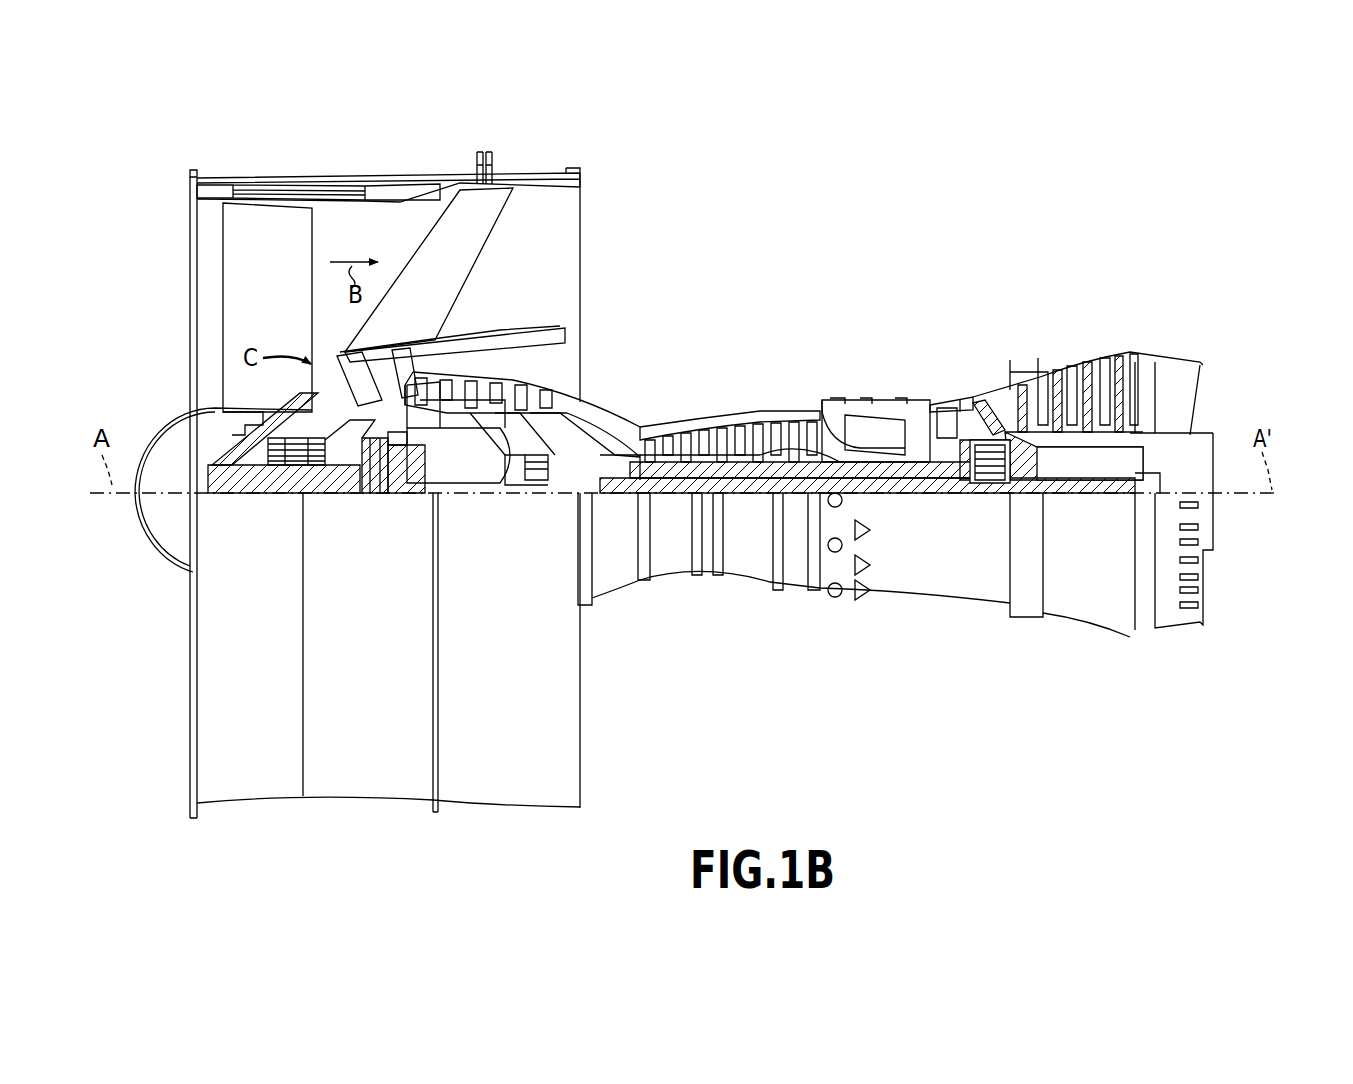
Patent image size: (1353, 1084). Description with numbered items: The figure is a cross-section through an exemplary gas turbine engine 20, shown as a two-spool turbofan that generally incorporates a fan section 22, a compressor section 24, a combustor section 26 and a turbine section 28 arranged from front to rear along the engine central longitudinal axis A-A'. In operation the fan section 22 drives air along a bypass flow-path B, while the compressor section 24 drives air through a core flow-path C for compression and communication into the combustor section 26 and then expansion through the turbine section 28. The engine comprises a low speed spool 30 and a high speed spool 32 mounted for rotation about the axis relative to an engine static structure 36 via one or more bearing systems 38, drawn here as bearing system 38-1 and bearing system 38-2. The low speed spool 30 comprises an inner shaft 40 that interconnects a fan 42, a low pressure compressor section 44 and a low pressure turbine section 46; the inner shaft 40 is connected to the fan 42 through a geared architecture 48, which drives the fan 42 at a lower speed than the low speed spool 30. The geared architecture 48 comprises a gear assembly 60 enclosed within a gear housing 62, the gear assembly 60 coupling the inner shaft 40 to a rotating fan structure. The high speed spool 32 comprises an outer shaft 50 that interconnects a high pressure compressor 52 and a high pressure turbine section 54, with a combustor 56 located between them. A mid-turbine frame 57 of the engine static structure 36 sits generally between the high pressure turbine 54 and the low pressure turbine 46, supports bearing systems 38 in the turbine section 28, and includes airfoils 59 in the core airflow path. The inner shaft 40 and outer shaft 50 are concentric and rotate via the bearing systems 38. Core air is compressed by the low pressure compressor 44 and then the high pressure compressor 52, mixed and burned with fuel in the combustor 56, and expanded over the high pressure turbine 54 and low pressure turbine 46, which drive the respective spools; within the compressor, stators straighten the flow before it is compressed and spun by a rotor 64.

The gas turbine engine 20 is at (931, 214).
The fan section 22 is at (430, 157).
The compressor section 24 is at (443, 290).
The combustor section 26 is at (925, 290).
The turbine section 28 is at (1145, 290).
The low speed spool 30 is at (750, 522).
The high speed spool 32 is at (792, 450).
The engine static structure 36 is at (177, 805).
The bearing system 38 is at (989, 480).
The bearing system 38-1 is at (272, 476).
The bearing system 38-2 is at (538, 473).
The inner shaft 40 is at (605, 495).
The fan 42 is at (278, 307).
The low pressure compressor section 44 is at (520, 378).
The low pressure turbine section 46 is at (1084, 368).
The geared architecture 48 is at (405, 508).
The outer shaft 50 is at (872, 478).
The high pressure compressor 52 is at (748, 426).
The high pressure turbine section 54 is at (940, 405).
The combustor 56 is at (876, 432).
The mid-turbine frame 57 is at (996, 409).
The airfoils 59 is at (985, 430).
The gear assembly 60 is at (420, 492).
The gear housing 62 is at (410, 432).
The rotor 64 is at (655, 429).